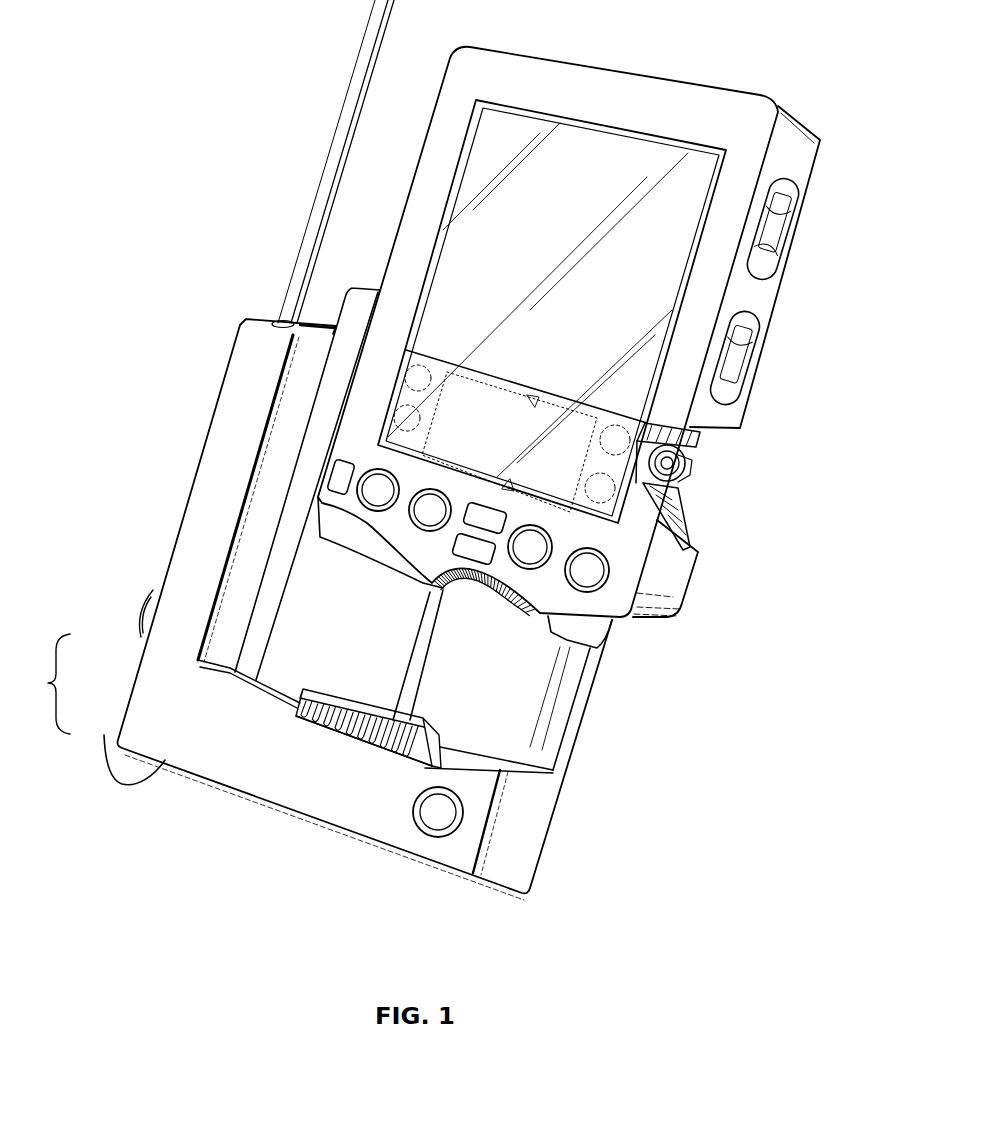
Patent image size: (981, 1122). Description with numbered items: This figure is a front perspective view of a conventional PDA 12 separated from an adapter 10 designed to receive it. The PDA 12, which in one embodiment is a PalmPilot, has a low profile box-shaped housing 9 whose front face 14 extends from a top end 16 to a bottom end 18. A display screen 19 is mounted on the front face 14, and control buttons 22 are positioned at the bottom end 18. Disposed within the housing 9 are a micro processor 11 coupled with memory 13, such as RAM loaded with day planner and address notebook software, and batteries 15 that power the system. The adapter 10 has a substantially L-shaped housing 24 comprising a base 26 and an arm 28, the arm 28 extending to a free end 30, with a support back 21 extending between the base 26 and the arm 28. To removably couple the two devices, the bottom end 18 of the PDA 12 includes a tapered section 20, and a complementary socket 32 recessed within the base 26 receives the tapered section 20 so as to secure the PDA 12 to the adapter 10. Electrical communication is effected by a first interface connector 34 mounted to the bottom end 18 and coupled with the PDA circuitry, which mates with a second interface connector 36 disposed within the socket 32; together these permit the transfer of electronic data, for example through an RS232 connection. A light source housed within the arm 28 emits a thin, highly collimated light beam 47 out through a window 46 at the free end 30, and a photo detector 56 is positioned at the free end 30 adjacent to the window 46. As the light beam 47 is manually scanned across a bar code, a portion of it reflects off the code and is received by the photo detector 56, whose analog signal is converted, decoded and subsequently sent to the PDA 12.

The housing 9 is at (685, 522).
The adapter 10 is at (190, 476).
The micro processor 11 is at (768, 220).
The PDA 12 is at (752, 416).
The memory 13 is at (728, 357).
The front face 14 is at (442, 122).
The batteries 15 is at (677, 453).
The top end 16 is at (623, 97).
The bottom end 18 is at (670, 578).
The display screen 19 is at (640, 310).
The tapered section 20 is at (367, 553).
The support back 21 is at (507, 708).
The control buttons 22 is at (580, 607).
The L-shaped housing 24 is at (49, 684).
The base 26 is at (104, 735).
The arm 28 is at (170, 572).
The free end 30 is at (240, 353).
The socket 32 is at (383, 753).
The first interface connector 34 is at (502, 598).
The second interface connector 36 is at (320, 720).
The window 46 is at (273, 322).
The light beam 47 is at (340, 125).
The photo detector 56 is at (317, 333).